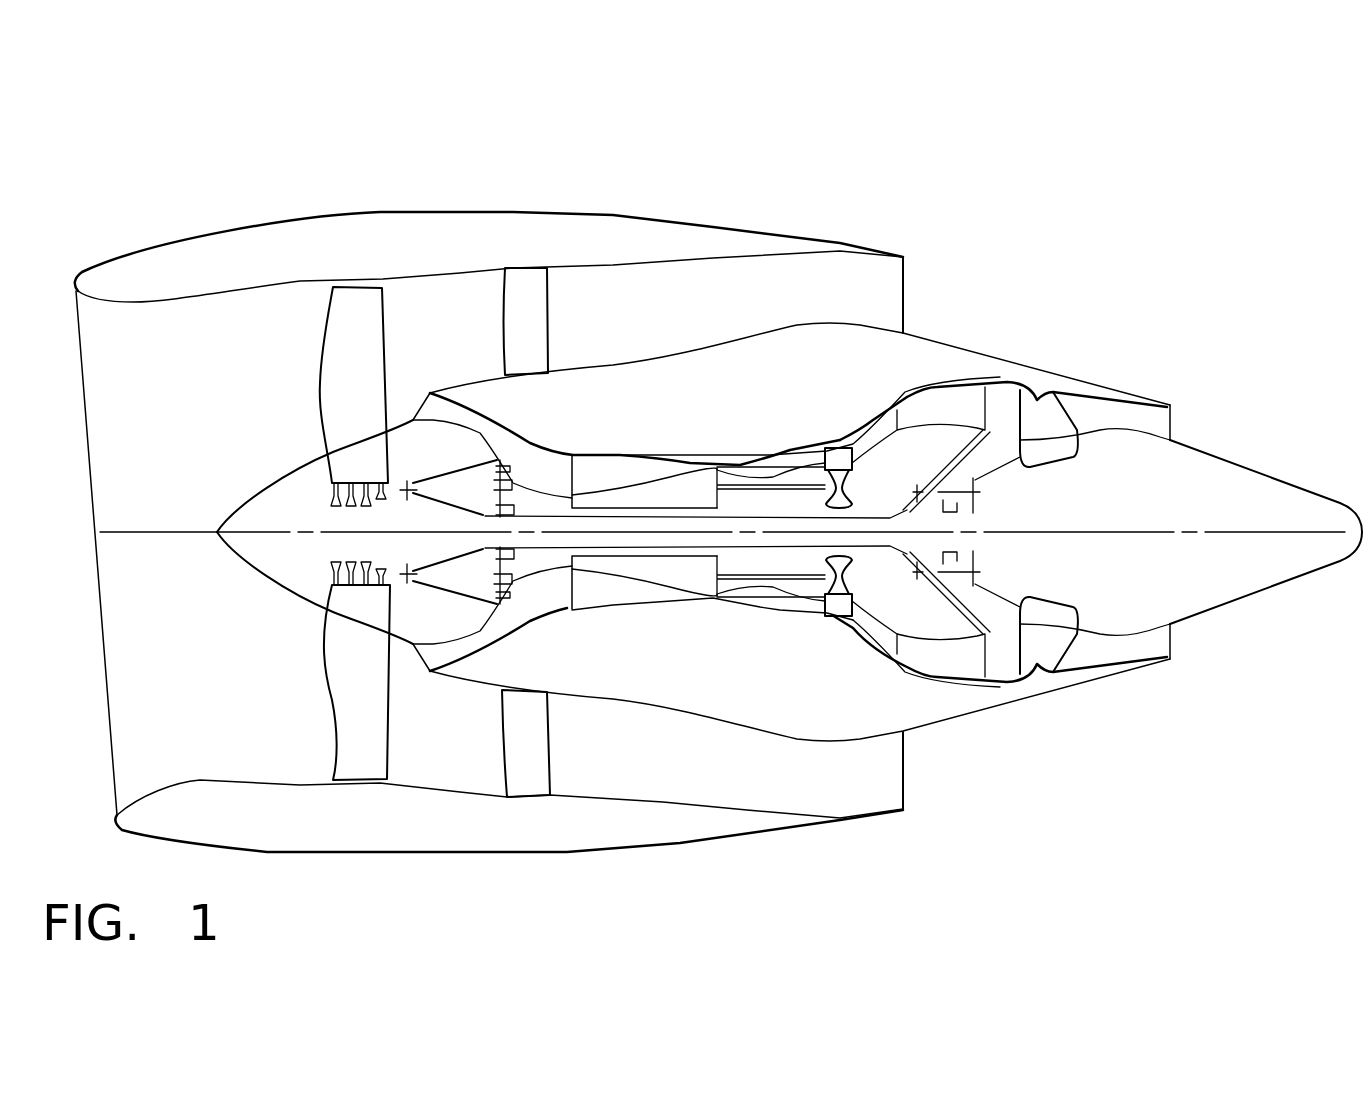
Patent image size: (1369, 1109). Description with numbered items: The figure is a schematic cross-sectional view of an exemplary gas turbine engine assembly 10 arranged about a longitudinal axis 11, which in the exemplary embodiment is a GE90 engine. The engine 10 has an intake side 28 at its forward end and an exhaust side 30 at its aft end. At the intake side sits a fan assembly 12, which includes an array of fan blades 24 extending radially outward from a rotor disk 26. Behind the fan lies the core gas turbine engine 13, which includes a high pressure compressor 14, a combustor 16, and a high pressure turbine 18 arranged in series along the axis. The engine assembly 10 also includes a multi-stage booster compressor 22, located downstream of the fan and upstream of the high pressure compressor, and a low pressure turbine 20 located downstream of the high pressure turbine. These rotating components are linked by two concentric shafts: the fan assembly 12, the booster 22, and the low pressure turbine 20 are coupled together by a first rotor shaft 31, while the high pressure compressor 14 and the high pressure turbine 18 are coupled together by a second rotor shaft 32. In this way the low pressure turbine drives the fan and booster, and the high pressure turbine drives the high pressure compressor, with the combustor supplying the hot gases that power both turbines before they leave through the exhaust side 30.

The gas turbine engine assembly 10 is at (893, 152).
The longitudinal axis 11 is at (208, 530).
The fan assembly 12 is at (364, 700).
The core gas turbine engine 13 is at (695, 450).
The high pressure compressor 14 is at (601, 468).
The combustor 16 is at (793, 462).
The high pressure turbine 18 is at (835, 616).
The low pressure turbine 20 is at (942, 400).
The multi-stage booster compressor 22 is at (473, 412).
The fan blades 24 is at (350, 383).
The rotor disk 26 is at (362, 610).
The intake side 28 is at (48, 320).
The exhaust side 30 is at (922, 290).
The first rotor shaft 31 is at (602, 552).
The second rotor shaft 32 is at (655, 598).